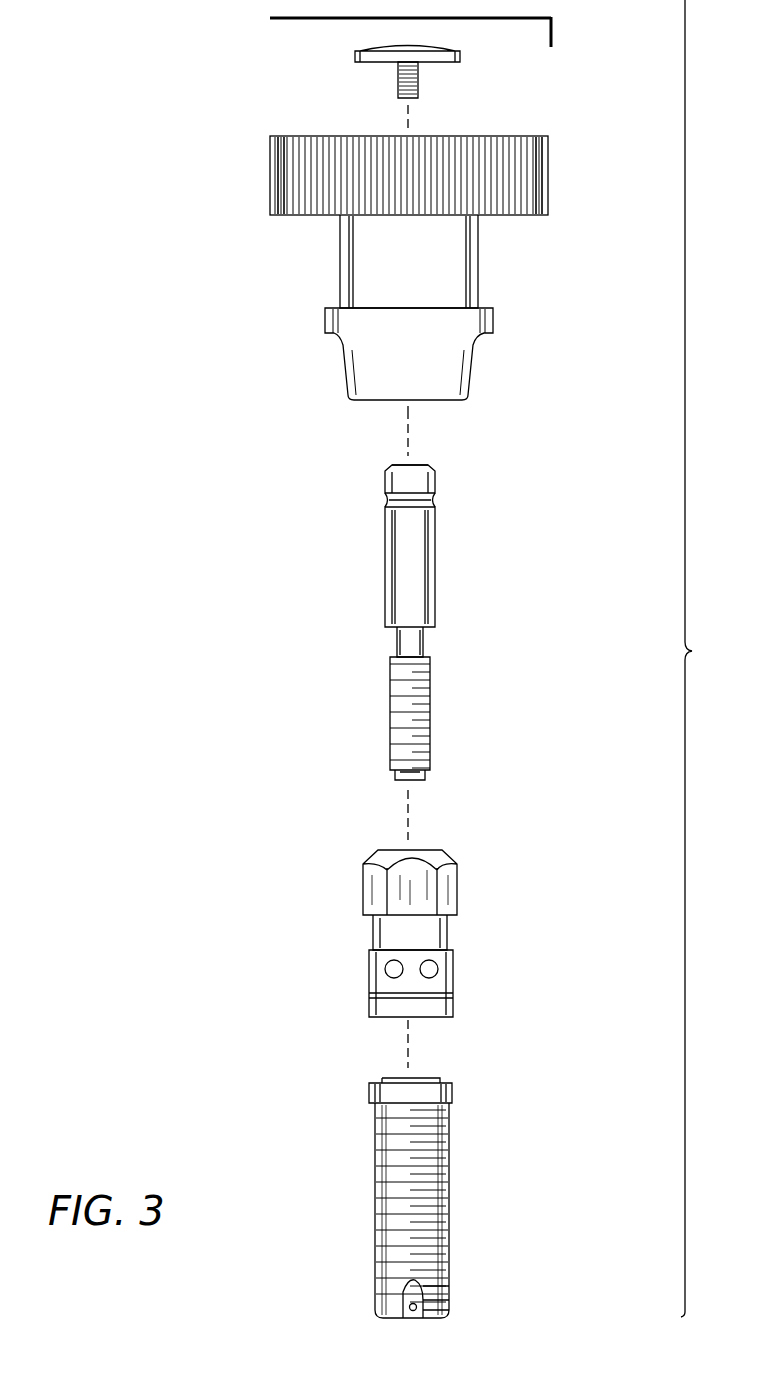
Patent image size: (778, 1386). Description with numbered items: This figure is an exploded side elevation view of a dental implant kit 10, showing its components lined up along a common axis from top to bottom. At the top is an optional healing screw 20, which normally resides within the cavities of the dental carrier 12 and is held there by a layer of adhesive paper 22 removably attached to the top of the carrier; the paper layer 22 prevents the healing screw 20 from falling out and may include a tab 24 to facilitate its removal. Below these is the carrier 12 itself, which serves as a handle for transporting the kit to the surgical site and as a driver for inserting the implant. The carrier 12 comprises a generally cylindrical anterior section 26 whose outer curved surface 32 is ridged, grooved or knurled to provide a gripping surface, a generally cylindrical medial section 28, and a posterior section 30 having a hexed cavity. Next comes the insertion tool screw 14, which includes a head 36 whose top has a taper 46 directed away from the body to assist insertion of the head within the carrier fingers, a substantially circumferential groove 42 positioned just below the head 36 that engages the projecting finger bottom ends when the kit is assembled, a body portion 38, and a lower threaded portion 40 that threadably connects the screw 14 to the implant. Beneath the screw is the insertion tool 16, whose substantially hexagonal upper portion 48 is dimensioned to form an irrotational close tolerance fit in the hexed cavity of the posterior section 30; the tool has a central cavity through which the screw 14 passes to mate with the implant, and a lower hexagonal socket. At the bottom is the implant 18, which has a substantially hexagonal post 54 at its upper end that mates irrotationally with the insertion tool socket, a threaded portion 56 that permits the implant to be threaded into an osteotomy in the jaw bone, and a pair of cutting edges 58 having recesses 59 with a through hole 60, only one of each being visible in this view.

The dental implant kit 10 is at (703, 658).
The dental carrier 12 is at (232, 243).
The insertion tool screw 14 is at (220, 464).
The insertion tool 16 is at (262, 887).
The implant 18 is at (340, 1160).
The healing screw 20 is at (440, 50).
The adhesive paper layer 22 is at (520, 16).
The tab 24 is at (556, 38).
The anterior section 26 is at (552, 172).
The medial section 28 is at (479, 265).
The posterior section 30 is at (471, 372).
The outer curved surface 32 is at (283, 170).
The head 36 is at (425, 478).
The body portion 38 is at (427, 549).
The lower threaded portion 40 is at (410, 681).
The groove 42 is at (388, 500).
The taper 46 is at (400, 468).
The hexagonal upper portion 48 is at (447, 885).
The hexagonal post 54 is at (420, 1078).
The threaded portion 56 is at (450, 1140).
The cutting edges 58 is at (425, 1292).
The recesses 59 is at (412, 1295).
The through hole 60 is at (418, 1307).